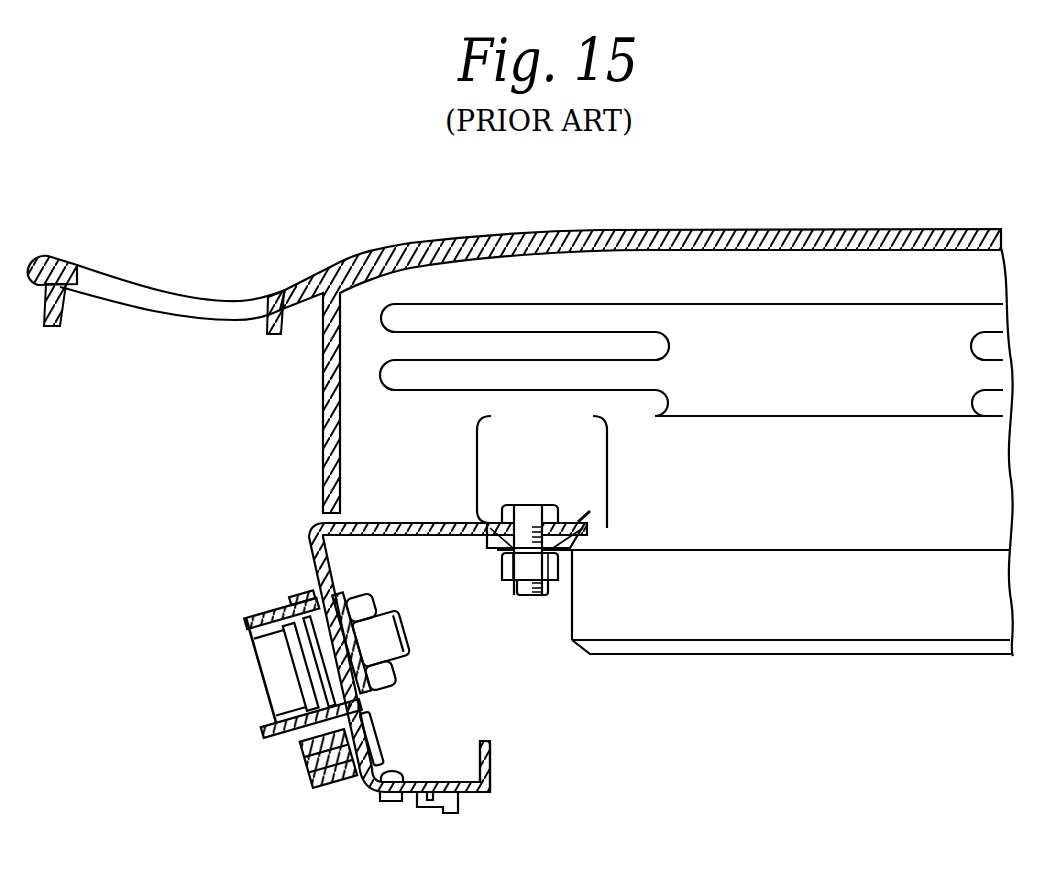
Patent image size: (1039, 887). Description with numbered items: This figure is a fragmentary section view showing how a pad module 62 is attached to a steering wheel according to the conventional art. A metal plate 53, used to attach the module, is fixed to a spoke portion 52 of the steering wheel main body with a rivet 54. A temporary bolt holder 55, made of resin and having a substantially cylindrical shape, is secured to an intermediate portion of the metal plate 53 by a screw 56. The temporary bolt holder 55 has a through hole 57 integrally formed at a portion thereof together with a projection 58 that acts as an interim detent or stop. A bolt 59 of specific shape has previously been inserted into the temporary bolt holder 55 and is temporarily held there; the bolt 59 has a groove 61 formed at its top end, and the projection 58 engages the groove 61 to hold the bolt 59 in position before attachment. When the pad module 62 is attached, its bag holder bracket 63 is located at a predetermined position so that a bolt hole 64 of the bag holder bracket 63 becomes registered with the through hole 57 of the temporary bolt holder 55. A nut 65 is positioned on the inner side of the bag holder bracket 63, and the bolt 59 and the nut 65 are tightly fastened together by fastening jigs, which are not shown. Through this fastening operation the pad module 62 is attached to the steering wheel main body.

The spoke portion 52 is at (430, 806).
The metal plate 53 is at (458, 780).
The rivet 54 is at (395, 772).
The temporary bolt holder 55 is at (262, 615).
The screw 56 is at (372, 727).
The through hole 57 is at (285, 702).
The projection 58 is at (300, 713).
The bolt 59 is at (300, 647).
The groove 61 is at (318, 668).
The pad module 62 is at (368, 238).
The bag holder bracket 63 is at (388, 521).
The bolt hole 64 is at (390, 613).
The nut 65 is at (345, 597).